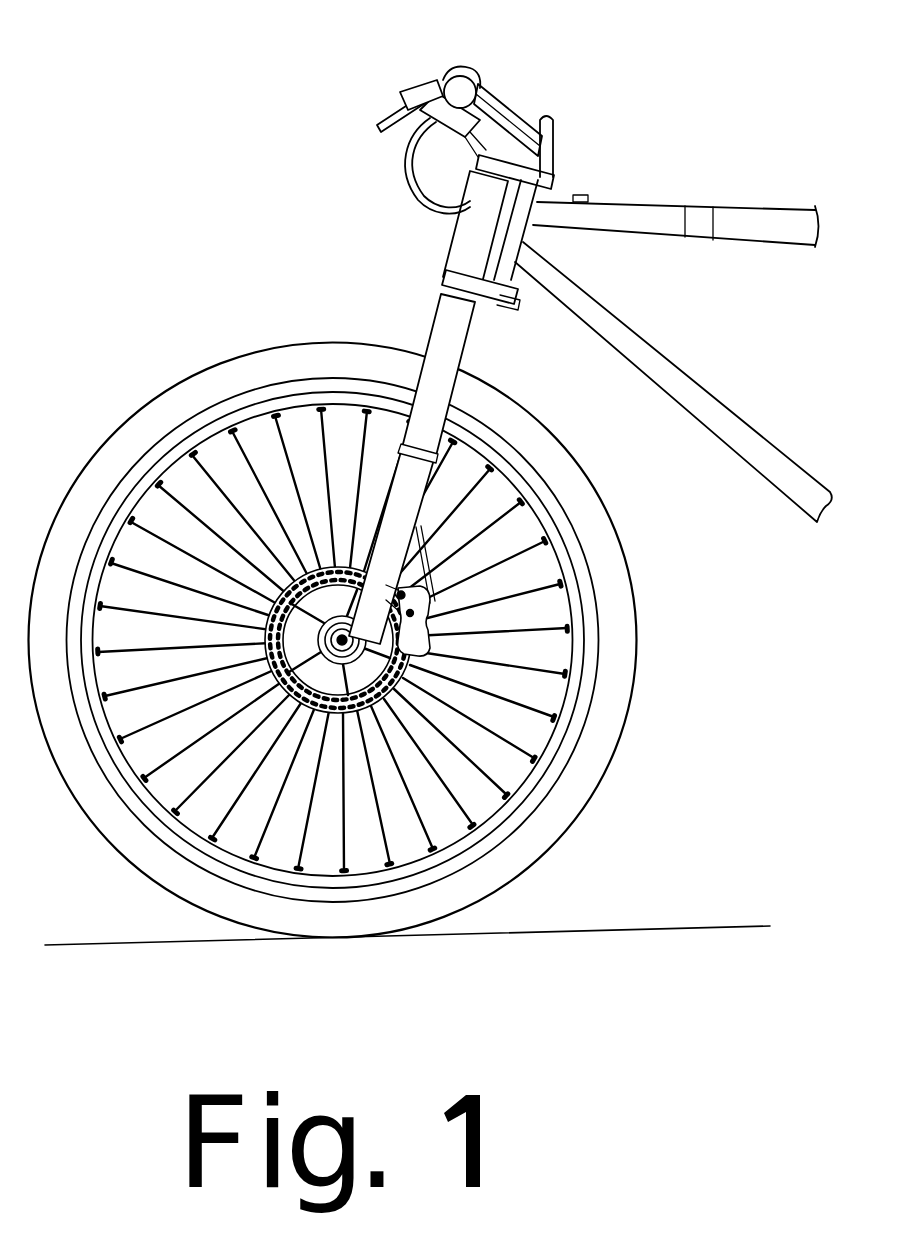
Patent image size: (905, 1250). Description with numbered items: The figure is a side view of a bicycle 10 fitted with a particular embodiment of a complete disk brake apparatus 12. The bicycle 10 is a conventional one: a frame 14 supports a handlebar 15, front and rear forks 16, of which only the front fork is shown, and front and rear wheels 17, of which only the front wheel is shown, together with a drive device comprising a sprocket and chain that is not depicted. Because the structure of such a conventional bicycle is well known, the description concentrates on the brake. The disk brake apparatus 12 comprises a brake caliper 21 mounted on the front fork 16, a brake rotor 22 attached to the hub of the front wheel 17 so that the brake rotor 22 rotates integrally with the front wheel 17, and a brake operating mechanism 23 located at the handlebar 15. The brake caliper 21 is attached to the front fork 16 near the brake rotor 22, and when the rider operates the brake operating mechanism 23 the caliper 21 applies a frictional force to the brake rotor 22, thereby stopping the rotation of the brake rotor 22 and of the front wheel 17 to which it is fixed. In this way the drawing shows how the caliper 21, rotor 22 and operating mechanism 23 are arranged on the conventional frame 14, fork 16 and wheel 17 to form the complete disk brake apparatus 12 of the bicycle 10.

The bicycle 10 is at (268, 174).
The disk brake apparatus 12 is at (420, 682).
The frame 14 is at (633, 327).
The handlebar 15 is at (520, 98).
The front fork 16 is at (474, 331).
The front wheel 17 is at (628, 552).
The brake caliper 21 is at (427, 628).
The brake rotor 22 is at (371, 716).
The brake operating mechanism 23 is at (433, 82).